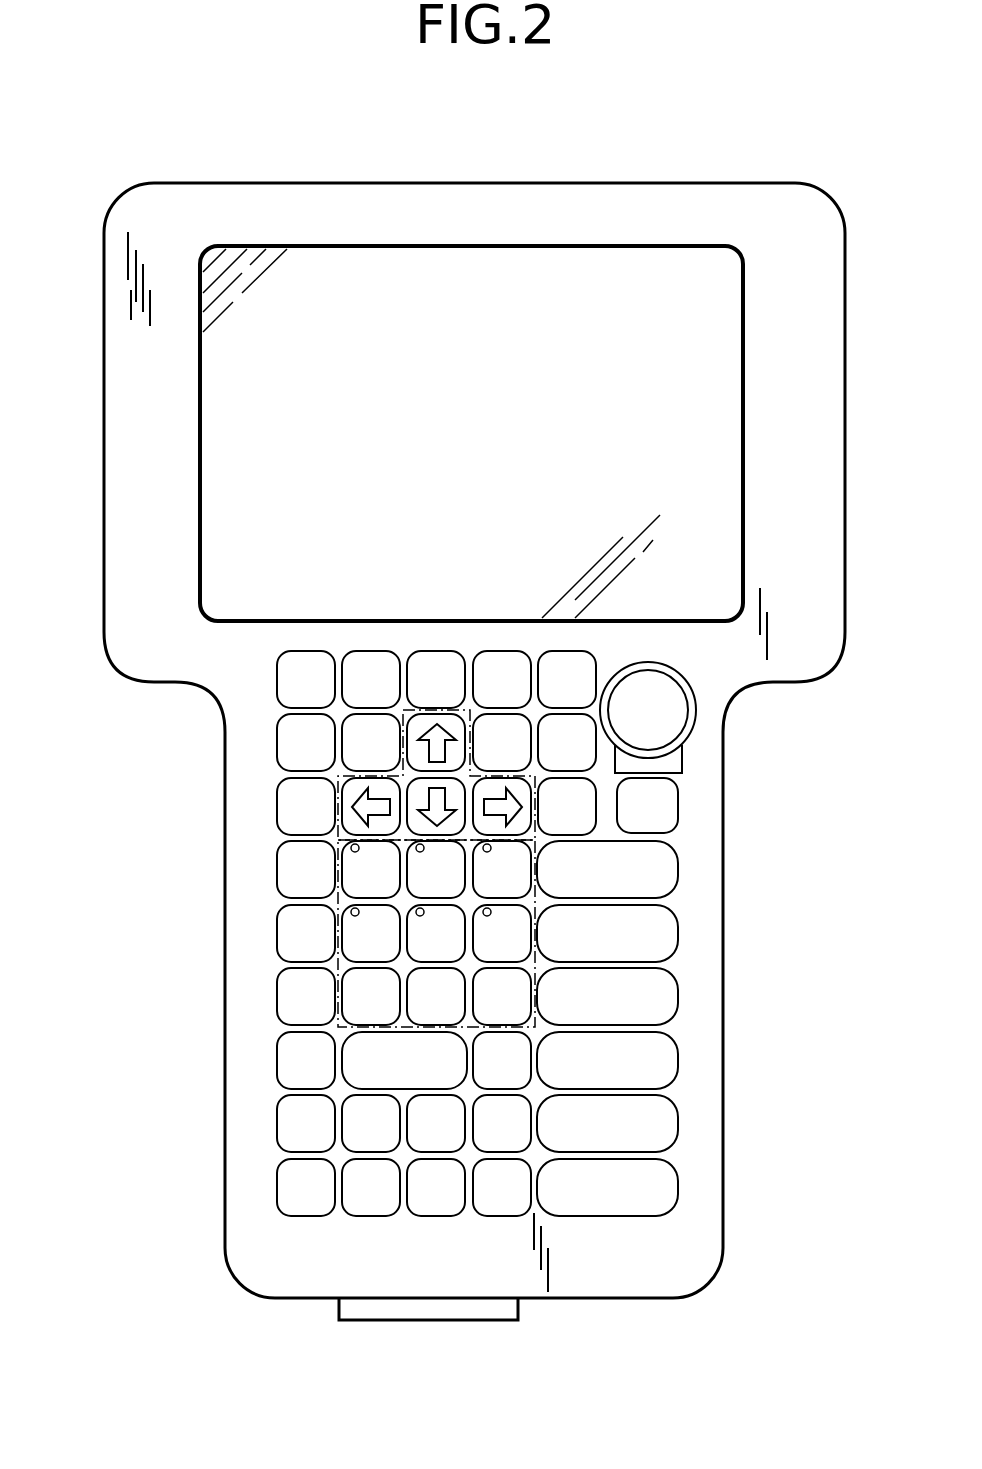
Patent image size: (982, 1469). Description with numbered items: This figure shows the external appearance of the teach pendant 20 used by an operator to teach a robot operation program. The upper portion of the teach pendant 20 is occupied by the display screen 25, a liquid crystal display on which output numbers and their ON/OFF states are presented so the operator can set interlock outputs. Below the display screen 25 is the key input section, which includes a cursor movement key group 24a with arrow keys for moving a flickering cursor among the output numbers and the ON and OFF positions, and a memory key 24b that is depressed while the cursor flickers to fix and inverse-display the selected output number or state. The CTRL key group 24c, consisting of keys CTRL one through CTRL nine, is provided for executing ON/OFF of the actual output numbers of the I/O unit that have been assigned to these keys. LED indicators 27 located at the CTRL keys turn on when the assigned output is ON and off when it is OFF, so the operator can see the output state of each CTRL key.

The teach pendant 20 is at (443, 183).
The display screen 25 is at (333, 272).
The cursor movement key group 24a is at (345, 778).
The memory key 24b is at (680, 803).
The CTRL key group 24c is at (340, 1003).
The LED indicators 27 is at (483, 849).